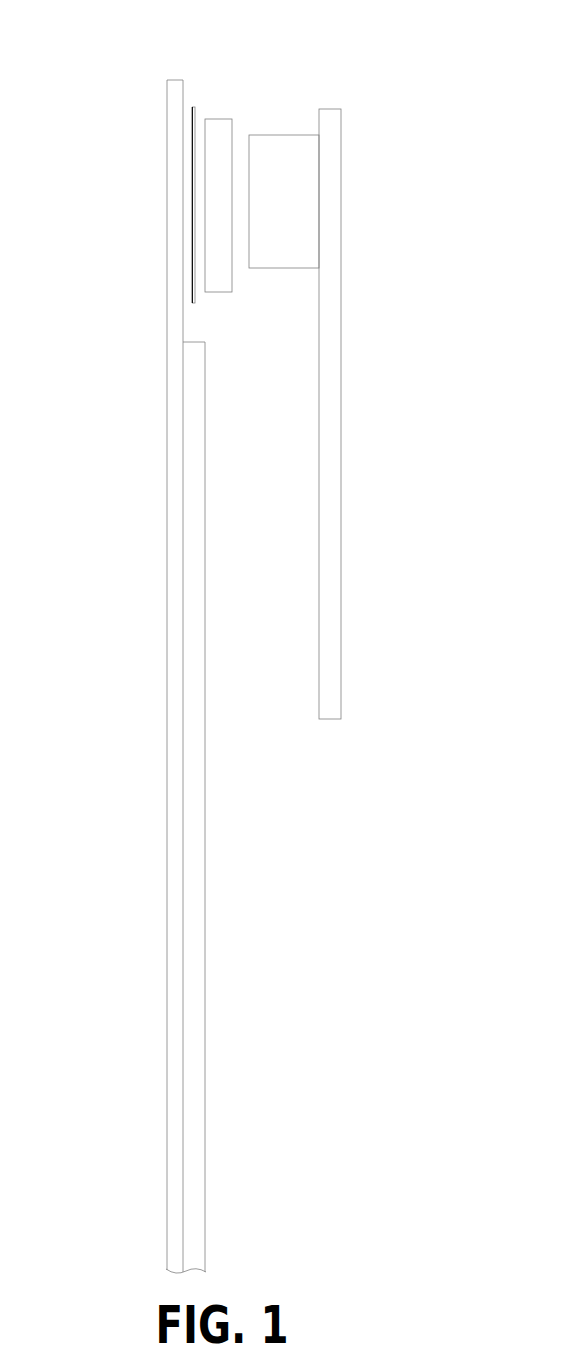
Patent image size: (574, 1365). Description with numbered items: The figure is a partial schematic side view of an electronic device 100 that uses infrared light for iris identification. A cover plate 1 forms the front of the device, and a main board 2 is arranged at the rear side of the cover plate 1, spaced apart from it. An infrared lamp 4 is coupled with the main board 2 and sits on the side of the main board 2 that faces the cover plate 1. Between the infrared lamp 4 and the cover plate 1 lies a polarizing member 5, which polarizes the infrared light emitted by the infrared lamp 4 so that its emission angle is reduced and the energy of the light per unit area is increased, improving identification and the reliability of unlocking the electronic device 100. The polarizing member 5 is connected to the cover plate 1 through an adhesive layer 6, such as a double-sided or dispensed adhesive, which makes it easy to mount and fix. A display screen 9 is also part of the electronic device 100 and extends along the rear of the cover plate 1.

The electronic device 100 is at (286, 43).
The cover plate 1 is at (166, 403).
The main board 2 is at (327, 305).
The infrared lamp 4 is at (290, 203).
The polarizing member 5 is at (223, 269).
The adhesive layer 6 is at (193, 151).
The display screen 9 is at (193, 733).